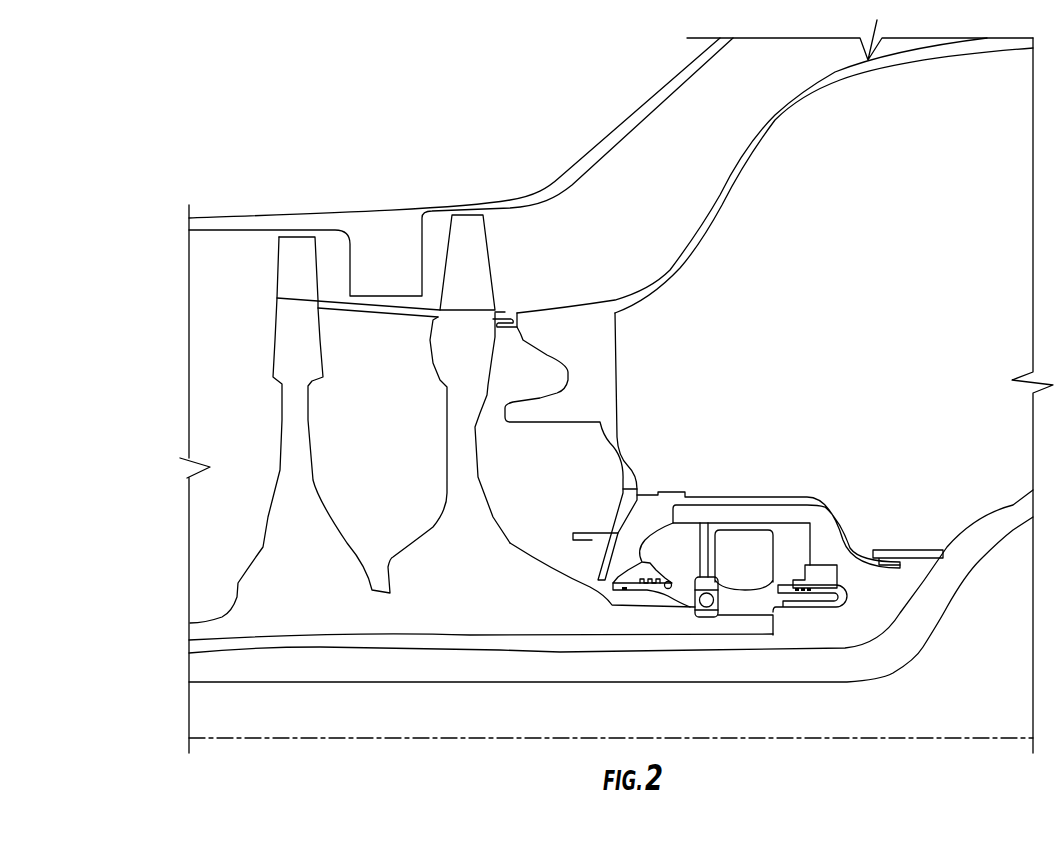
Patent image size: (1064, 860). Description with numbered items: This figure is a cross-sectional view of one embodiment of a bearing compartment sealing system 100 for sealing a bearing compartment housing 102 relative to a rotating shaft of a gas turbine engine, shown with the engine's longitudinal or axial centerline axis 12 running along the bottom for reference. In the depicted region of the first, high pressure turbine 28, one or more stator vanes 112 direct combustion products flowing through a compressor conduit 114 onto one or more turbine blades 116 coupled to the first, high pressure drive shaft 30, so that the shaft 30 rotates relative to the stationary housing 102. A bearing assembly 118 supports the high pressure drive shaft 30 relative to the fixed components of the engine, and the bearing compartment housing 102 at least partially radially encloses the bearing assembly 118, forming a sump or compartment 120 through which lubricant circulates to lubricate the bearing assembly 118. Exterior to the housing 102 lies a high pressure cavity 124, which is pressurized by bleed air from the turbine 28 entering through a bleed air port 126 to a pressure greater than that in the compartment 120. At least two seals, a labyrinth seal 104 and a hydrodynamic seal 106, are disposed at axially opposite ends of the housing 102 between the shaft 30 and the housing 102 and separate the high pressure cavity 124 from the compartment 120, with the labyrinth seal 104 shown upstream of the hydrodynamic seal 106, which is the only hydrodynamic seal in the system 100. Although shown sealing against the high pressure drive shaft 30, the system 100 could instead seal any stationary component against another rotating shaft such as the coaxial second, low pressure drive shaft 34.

The longitudinal or axial centerline axis 12 is at (945, 737).
The first (high pressure) turbine 28 is at (380, 155).
The first (high pressure) drive shaft 30 is at (742, 627).
The second (low pressure) drive shaft 34 is at (933, 617).
The bearing compartment sealing system 100 is at (868, 485).
The bearing compartment housing 102 is at (670, 530).
The labyrinth seal 104 is at (625, 570).
The hydrodynamic seal 106 is at (820, 575).
The stator vanes 112 is at (380, 238).
The compressor conduit 114 is at (600, 185).
The turbine blades 116 is at (292, 263).
The bearing assembly 118 is at (730, 598).
The compartment 120 is at (740, 543).
The high pressure cavity 124 is at (580, 463).
The bleed air port 126 is at (516, 300).